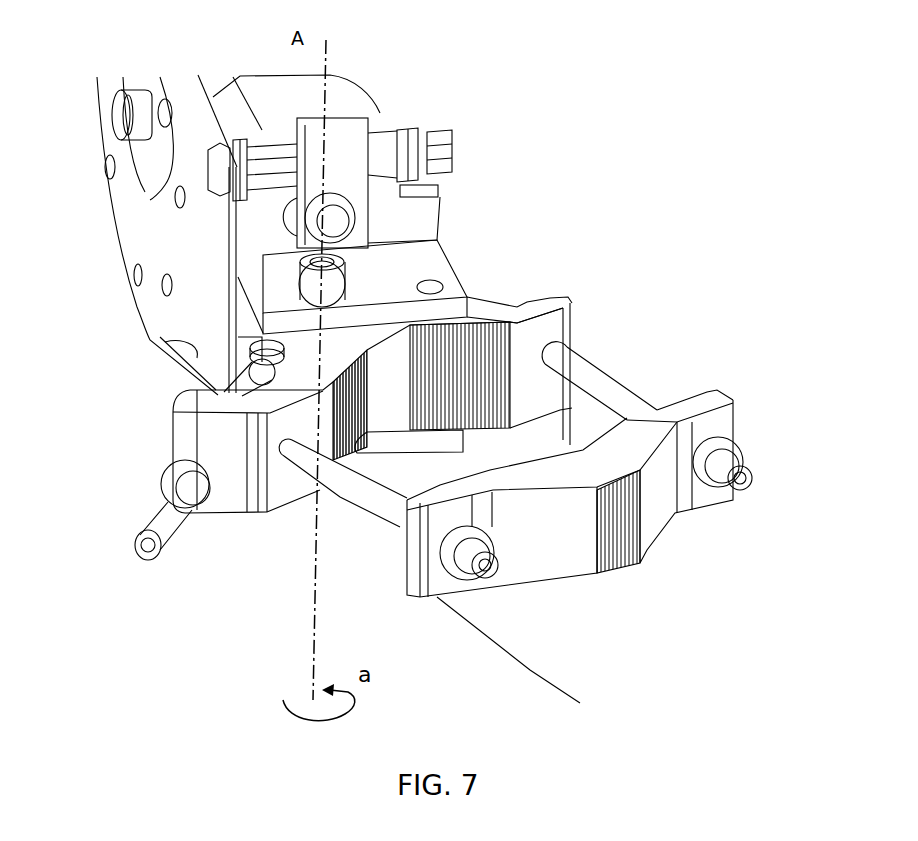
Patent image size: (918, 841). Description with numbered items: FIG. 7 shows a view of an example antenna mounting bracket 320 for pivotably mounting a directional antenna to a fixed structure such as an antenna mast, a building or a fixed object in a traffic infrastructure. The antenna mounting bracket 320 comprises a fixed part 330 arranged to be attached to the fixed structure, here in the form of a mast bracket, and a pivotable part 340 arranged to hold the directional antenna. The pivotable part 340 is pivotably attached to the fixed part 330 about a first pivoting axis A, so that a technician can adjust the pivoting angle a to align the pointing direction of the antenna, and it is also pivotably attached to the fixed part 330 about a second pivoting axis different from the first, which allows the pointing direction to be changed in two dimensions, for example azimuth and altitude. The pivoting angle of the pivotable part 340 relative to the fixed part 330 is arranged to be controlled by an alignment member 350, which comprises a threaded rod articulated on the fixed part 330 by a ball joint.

The antenna mounting bracket 320 is at (706, 65).
The fixed part 330 is at (537, 313).
The pivotable part 340 is at (263, 288).
The alignment member 350 is at (150, 548).